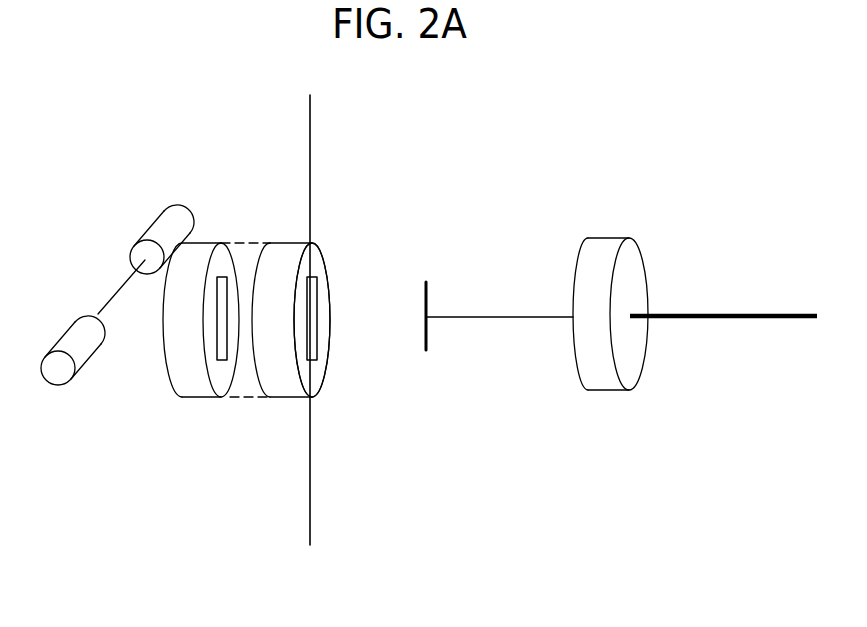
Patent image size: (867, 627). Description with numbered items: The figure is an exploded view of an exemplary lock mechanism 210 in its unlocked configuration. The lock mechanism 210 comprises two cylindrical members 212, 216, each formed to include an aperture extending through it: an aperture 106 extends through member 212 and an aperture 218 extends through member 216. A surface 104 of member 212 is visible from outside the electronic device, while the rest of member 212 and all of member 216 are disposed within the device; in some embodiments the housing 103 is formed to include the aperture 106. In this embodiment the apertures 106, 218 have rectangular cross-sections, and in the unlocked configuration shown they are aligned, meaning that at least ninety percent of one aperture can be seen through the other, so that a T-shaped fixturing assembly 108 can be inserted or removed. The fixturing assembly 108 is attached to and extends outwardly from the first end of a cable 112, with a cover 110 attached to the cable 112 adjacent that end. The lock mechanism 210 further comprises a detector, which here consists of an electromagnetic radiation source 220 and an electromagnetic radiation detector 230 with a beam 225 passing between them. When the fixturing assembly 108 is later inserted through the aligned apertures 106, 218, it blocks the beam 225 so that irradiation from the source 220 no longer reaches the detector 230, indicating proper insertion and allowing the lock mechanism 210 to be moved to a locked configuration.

The housing 103 is at (310, 508).
The surface 104 is at (312, 375).
The aperture 106 is at (312, 291).
The T-shaped fixturing assembly 108 is at (428, 297).
The cover 110 is at (640, 248).
The cable 112 is at (708, 313).
The lock mechanism 210 is at (270, 412).
The cylindrical member 212 is at (287, 398).
The cylindrical member 216 is at (202, 398).
The aperture 218 is at (222, 286).
The electromagnetic radiation source 220 is at (72, 383).
The beam 225 is at (118, 288).
The electromagnetic radiation detector 230 is at (157, 217).